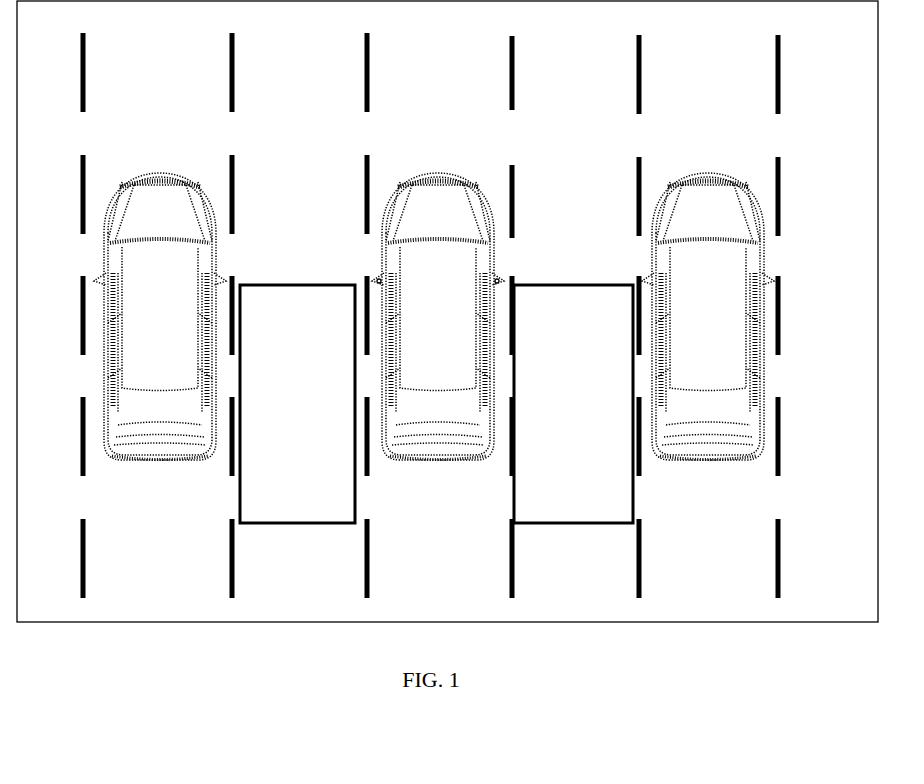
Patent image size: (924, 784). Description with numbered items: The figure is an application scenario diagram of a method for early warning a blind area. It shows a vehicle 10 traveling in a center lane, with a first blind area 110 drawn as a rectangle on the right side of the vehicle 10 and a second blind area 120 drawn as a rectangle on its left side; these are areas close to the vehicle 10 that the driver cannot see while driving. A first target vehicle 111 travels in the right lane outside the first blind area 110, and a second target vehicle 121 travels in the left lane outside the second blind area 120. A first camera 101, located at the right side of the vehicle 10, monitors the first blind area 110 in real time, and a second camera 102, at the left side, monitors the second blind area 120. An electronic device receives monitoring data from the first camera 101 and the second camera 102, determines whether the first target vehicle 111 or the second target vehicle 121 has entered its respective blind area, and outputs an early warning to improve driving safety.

The vehicle 10 is at (414, 175).
The first camera 101 is at (490, 290).
The second camera 102 is at (385, 290).
The first blind area 110 is at (568, 273).
The first target vehicle 111 is at (662, 447).
The second blind area 120 is at (300, 272).
The second target vehicle 121 is at (207, 465).